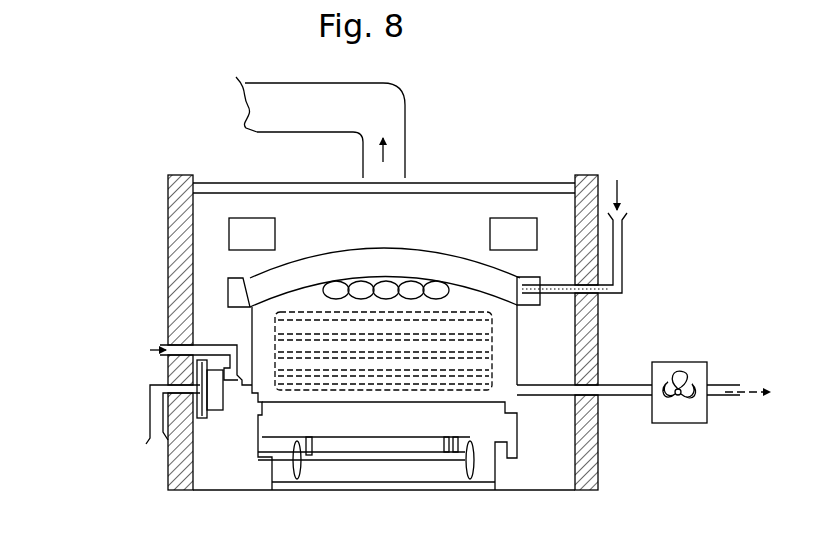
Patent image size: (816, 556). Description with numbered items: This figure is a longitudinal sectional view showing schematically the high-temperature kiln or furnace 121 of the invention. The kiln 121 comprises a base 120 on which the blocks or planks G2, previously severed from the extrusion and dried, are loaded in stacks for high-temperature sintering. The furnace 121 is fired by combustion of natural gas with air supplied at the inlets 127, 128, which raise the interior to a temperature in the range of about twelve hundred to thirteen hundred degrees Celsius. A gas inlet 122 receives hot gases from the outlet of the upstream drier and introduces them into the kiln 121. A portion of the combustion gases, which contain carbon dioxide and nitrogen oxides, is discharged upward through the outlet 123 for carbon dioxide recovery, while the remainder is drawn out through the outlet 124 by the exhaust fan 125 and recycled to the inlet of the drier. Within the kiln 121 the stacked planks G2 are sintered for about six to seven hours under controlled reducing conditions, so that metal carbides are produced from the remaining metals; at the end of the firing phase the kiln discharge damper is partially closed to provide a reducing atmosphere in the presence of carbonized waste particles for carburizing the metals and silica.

The base 120 is at (443, 490).
The kiln or furnace 121 is at (143, 246).
The gas inlet 122 is at (623, 256).
The outlet 123 is at (412, 110).
The outlet 124 is at (612, 398).
The exhaust fan 125 is at (698, 423).
The inlet 127 is at (160, 352).
The inlet 128 is at (140, 454).
The blocks or planks G2 is at (487, 340).